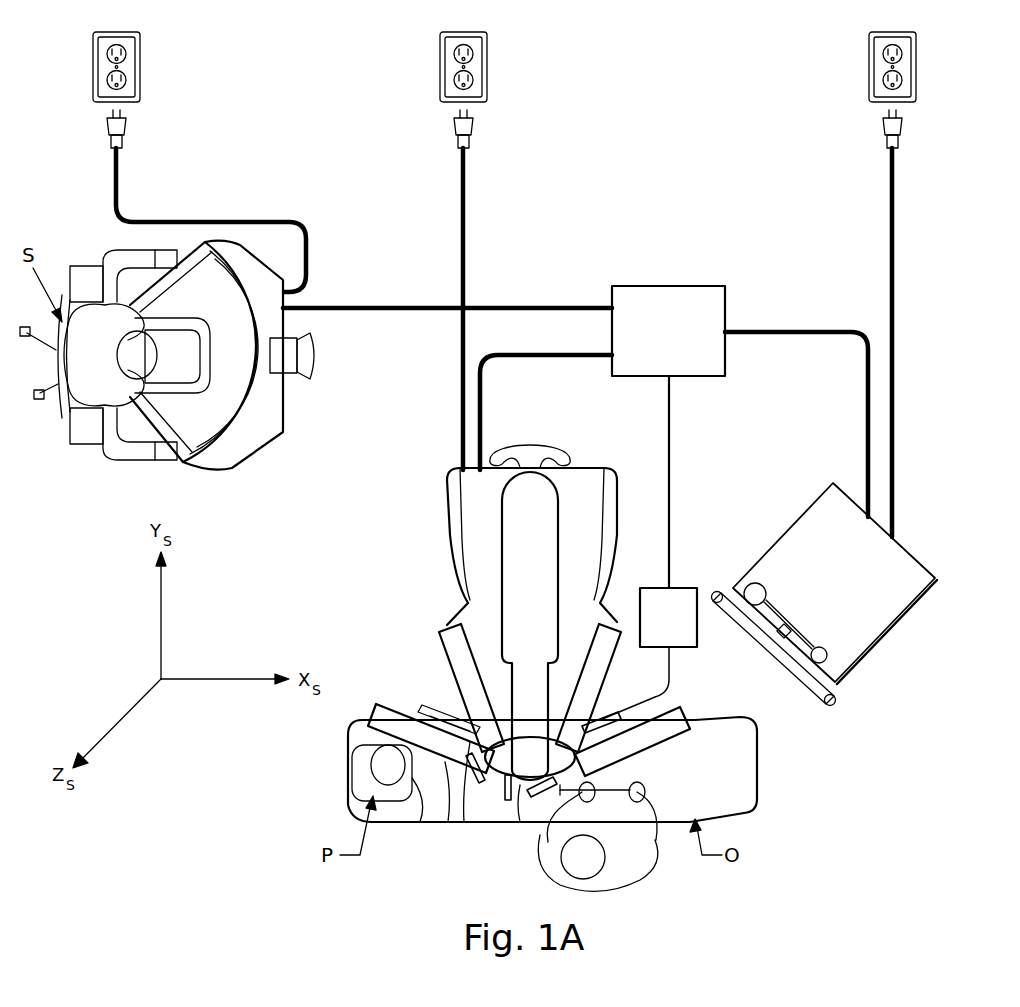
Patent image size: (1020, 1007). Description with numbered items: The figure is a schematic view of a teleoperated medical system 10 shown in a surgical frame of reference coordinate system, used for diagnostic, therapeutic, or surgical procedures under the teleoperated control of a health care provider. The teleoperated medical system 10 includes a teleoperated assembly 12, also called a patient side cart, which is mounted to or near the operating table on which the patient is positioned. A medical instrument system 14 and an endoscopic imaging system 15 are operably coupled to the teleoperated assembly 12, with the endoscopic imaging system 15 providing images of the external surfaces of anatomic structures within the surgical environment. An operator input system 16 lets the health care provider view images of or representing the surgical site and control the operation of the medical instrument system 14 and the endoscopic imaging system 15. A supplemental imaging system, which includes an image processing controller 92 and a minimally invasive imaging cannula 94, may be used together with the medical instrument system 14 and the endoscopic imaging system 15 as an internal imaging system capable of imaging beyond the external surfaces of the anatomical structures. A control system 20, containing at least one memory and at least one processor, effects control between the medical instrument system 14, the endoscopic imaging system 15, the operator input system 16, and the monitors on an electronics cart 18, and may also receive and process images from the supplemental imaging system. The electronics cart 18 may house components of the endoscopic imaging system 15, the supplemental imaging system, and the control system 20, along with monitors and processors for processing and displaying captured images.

The teleoperated medical system 10 is at (668, 61).
The teleoperated assembly 12 is at (447, 513).
The medical instrument system 14 is at (470, 784).
The endoscopic imaging system 15 is at (505, 800).
The operator input system 16 is at (260, 450).
The electronics cart 18 is at (883, 637).
The control system 20 is at (681, 345).
The image processing controller 92 is at (648, 548).
The minimally invasive imaging cannula 94 is at (601, 718).